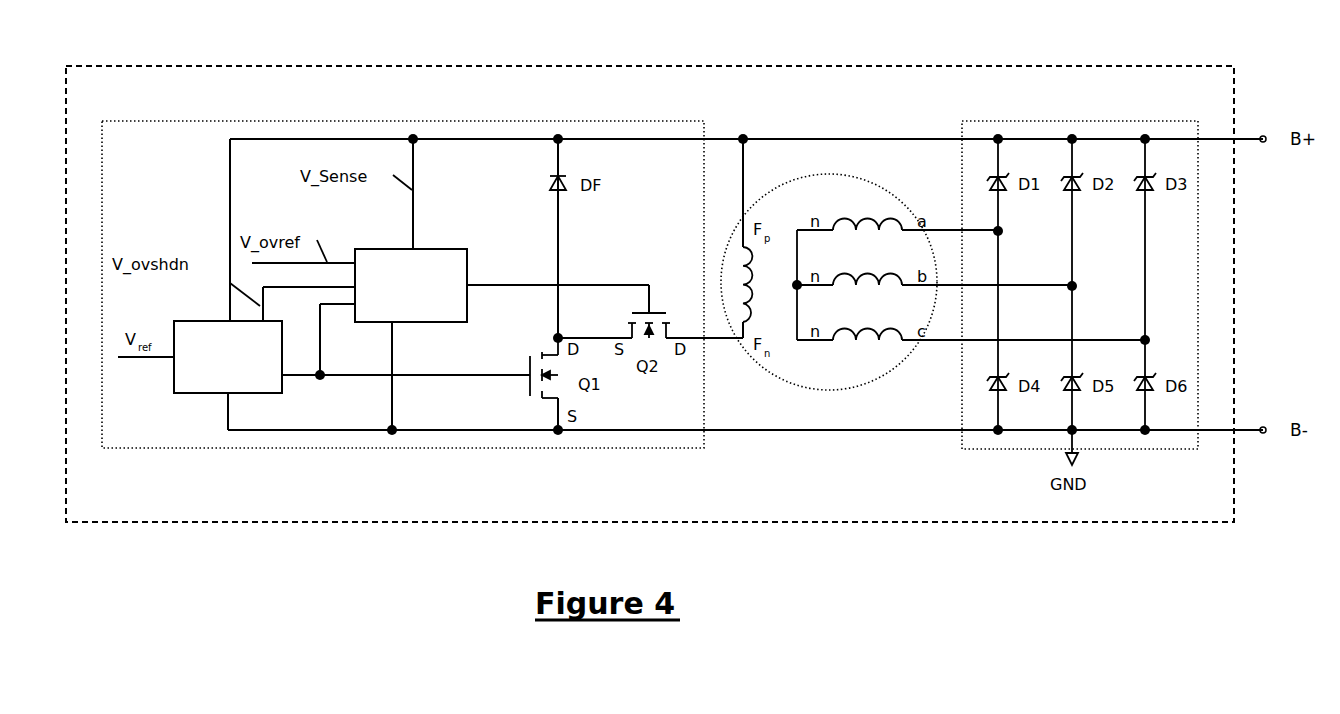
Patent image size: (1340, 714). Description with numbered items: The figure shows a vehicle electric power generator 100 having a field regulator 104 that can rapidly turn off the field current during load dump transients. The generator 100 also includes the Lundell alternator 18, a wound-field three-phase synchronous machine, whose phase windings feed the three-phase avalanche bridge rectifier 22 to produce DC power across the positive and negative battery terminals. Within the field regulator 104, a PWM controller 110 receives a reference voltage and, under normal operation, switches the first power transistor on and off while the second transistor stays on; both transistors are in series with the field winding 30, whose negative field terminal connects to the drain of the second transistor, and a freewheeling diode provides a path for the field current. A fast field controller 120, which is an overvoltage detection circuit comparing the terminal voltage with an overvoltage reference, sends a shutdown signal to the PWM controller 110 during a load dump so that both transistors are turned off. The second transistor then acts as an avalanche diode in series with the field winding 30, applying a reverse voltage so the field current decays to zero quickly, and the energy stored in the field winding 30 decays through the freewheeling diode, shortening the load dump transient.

The generator 100 is at (1148, 65).
The field regulator 104 is at (584, 121).
The PWM controller 110 is at (188, 320).
The fast field controller 120 is at (397, 248).
The Lundell alternator 18 is at (852, 180).
The 3-phase avalanche bridge rectifier 22 is at (1092, 120).
The field winding 30 is at (774, 315).